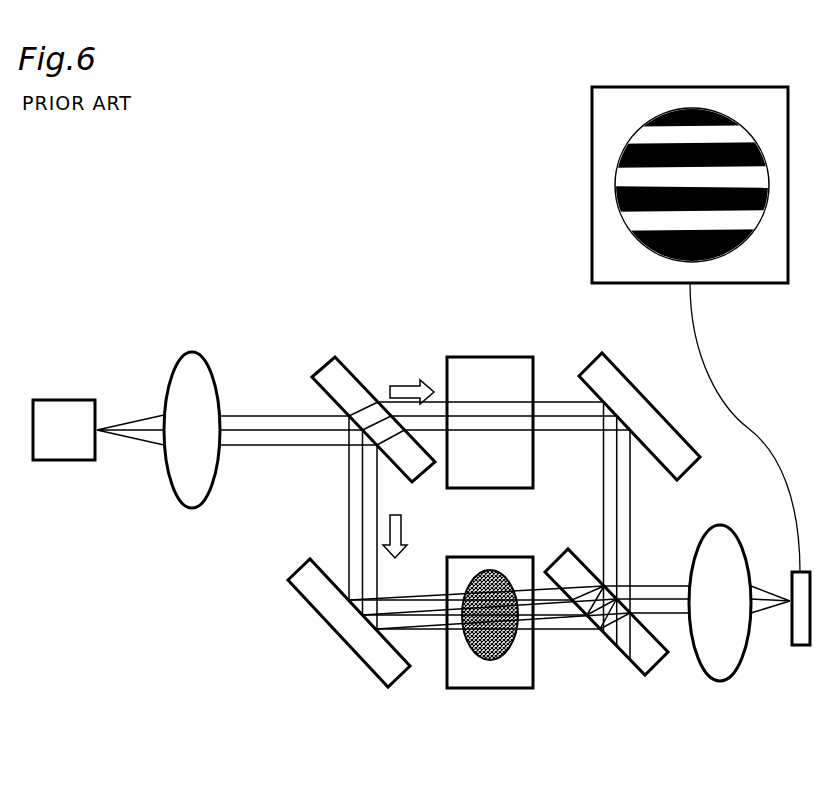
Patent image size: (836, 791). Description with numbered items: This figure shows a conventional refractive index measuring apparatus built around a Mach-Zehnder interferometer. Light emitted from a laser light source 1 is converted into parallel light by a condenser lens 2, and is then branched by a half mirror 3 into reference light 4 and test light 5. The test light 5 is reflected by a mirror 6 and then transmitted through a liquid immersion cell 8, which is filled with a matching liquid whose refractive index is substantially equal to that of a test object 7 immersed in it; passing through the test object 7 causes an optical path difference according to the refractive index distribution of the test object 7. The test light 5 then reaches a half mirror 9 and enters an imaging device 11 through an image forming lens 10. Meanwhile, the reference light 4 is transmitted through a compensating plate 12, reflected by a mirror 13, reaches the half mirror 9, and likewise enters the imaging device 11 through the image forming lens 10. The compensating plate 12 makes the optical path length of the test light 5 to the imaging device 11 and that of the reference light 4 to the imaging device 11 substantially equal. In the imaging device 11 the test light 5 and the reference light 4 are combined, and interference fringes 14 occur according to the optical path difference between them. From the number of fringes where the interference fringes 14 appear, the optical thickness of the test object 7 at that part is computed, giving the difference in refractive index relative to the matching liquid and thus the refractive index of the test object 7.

The laser light source 1 is at (57, 407).
The condenser lens 2 is at (190, 352).
The half mirror 3 is at (335, 360).
The reference light 4 is at (408, 392).
The test light 5 is at (380, 542).
The mirror 6 is at (378, 687).
The test object 7 is at (482, 660).
The liquid immersion cell 8 is at (522, 685).
The half mirror 9 is at (643, 677).
The image forming lens 10 is at (712, 660).
The imaging device 11 is at (797, 647).
The compensating plate 12 is at (473, 358).
The mirror 13 is at (598, 382).
The interference fringes 14 is at (635, 97).